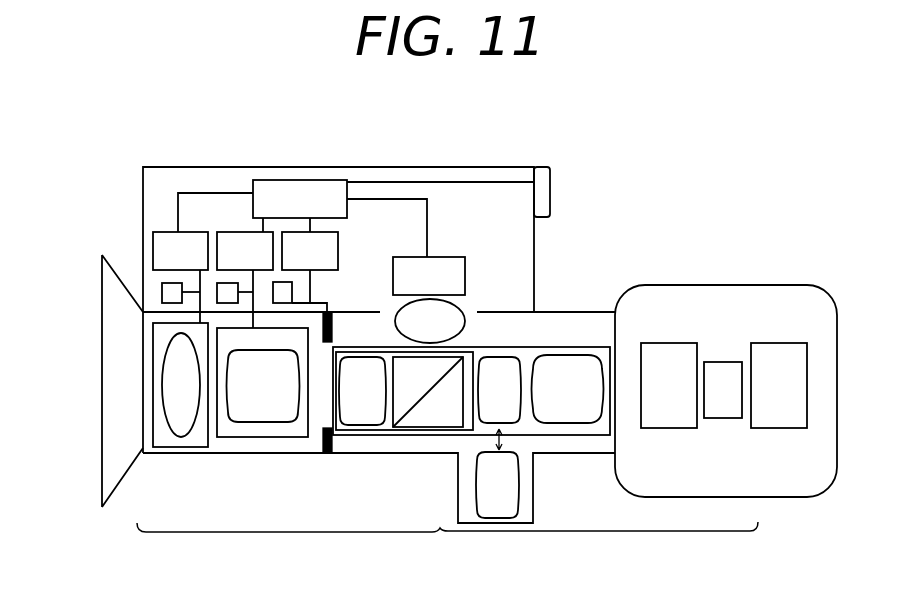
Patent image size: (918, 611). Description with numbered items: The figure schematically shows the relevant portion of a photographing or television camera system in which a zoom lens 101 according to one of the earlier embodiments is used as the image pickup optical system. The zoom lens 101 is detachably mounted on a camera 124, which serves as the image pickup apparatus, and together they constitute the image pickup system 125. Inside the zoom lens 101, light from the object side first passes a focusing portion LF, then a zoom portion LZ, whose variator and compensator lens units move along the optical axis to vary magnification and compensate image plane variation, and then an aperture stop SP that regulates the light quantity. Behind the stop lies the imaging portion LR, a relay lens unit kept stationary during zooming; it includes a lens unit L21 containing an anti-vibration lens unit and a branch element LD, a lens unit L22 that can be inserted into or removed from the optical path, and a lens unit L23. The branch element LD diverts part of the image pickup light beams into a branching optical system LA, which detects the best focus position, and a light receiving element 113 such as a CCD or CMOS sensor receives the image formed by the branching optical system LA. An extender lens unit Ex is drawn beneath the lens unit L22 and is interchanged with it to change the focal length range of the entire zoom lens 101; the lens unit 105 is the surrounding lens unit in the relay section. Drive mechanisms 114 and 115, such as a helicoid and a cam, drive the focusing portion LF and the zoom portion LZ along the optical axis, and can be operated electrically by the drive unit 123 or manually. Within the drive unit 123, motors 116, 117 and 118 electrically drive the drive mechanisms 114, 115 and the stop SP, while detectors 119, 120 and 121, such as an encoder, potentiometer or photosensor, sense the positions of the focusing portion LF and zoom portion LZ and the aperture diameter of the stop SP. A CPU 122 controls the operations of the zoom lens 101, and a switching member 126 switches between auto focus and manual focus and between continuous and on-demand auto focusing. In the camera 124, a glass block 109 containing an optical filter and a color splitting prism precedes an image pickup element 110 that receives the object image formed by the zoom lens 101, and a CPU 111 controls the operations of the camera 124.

The zoom lens 101 is at (107, 337).
The lens unit 105 is at (367, 423).
The glass block 109 is at (685, 343).
The image pickup element 110 is at (735, 362).
The CPU 111 is at (797, 343).
The light receiving element 113 is at (452, 256).
The drive mechanism 114 is at (180, 418).
The drive mechanism 115 is at (262, 418).
The motor 116 is at (172, 232).
The motor 117 is at (240, 232).
The motor 118 is at (338, 238).
The detector 119 is at (162, 290).
The detector 120 is at (215, 283).
The detector 121 is at (293, 288).
The CPU 122 is at (328, 180).
The drive unit 123 is at (223, 167).
The camera 124 is at (777, 497).
The image pickup system 125 is at (447, 546).
The switching member 126 is at (550, 200).
The focusing portion LF is at (181, 385).
The zoom portion LZ is at (263, 386).
The branching optical system LA is at (430, 321).
The branch element LD is at (428, 392).
The lens unit L21 is at (342, 437).
The lens unit L22 is at (503, 355).
The lens unit L23 is at (572, 425).
The imaging portion LR is at (572, 347).
The aperture stop SP is at (323, 447).
The extender lens unit Ex is at (478, 510).